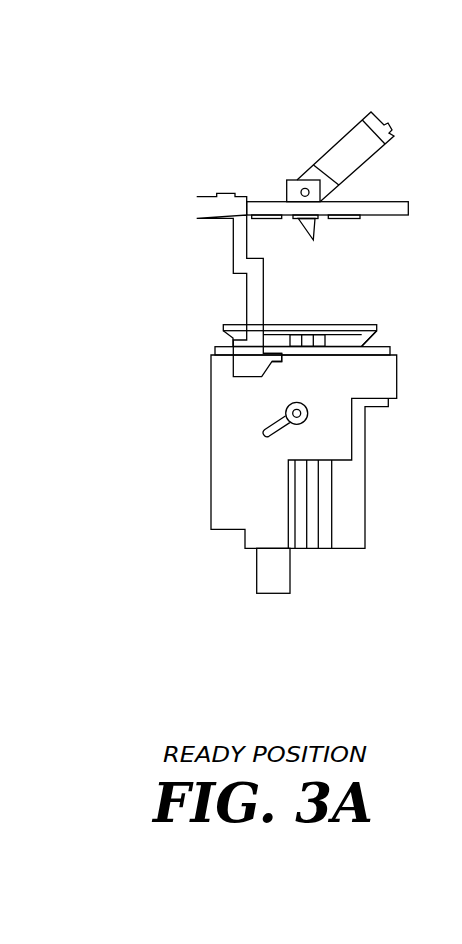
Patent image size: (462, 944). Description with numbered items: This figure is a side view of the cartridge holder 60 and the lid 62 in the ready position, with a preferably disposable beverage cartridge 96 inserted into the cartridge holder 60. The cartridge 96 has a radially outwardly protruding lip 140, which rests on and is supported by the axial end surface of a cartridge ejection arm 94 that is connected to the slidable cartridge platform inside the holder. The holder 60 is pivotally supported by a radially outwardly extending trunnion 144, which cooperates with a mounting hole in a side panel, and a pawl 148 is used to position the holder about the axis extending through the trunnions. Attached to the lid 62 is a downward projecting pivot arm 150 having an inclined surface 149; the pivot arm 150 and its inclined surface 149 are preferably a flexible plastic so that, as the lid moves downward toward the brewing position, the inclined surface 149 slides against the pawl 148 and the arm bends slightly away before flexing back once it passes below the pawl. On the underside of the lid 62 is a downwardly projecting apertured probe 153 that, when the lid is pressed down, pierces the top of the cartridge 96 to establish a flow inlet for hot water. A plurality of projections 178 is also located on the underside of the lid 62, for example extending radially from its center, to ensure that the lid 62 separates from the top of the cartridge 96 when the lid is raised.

The lid 62 is at (390, 205).
The projections 178 is at (262, 219).
The apertured probe 153 is at (316, 230).
The pivot arm 150 is at (251, 298).
The inclined surface 149 is at (262, 377).
The lip 140 is at (280, 328).
The cartridge ejection arm 94 is at (312, 333).
The beverage cartridge 96 is at (379, 336).
The cartridge holder 60 is at (384, 374).
The pawl 148 is at (285, 412).
The trunnion 144 is at (307, 421).